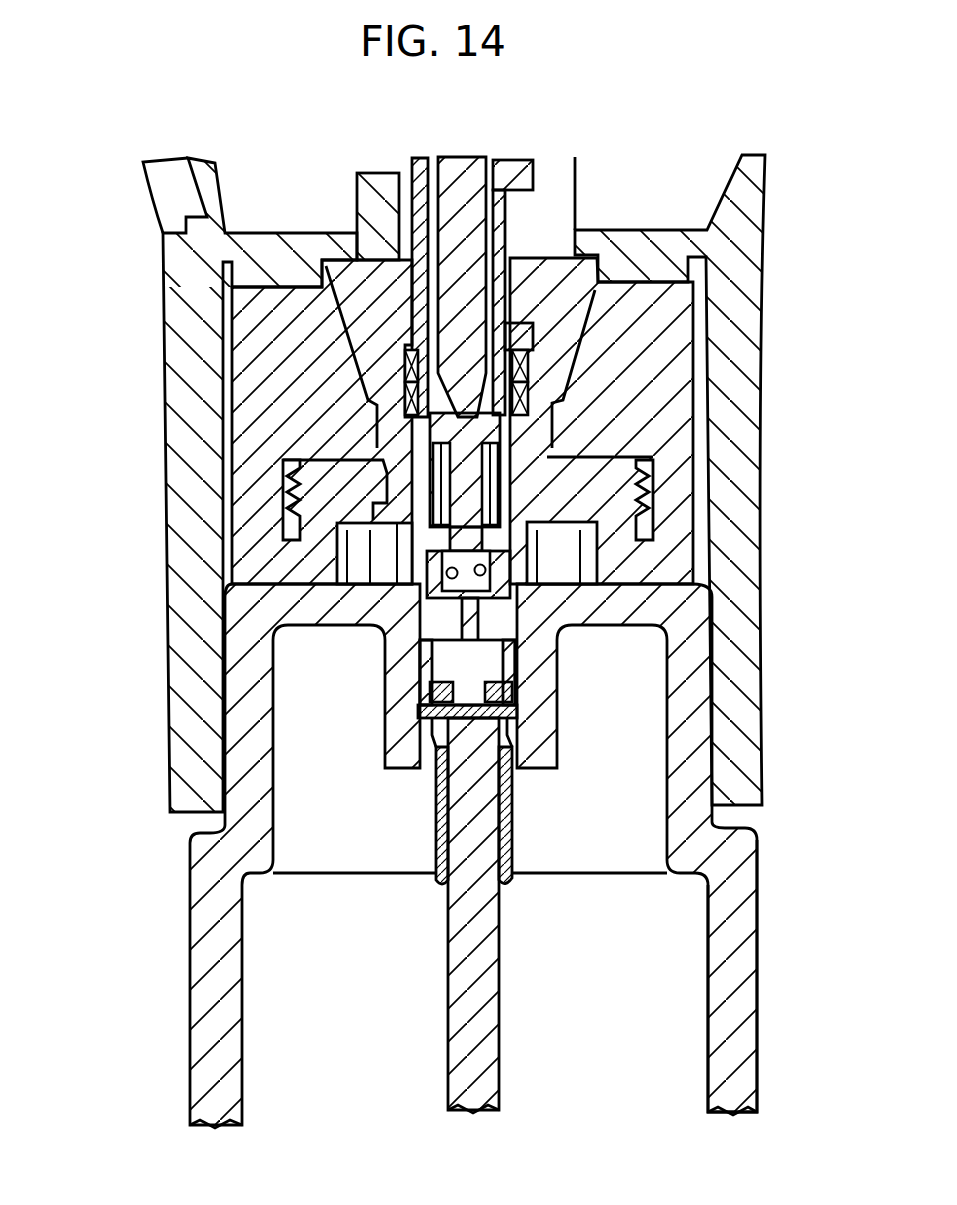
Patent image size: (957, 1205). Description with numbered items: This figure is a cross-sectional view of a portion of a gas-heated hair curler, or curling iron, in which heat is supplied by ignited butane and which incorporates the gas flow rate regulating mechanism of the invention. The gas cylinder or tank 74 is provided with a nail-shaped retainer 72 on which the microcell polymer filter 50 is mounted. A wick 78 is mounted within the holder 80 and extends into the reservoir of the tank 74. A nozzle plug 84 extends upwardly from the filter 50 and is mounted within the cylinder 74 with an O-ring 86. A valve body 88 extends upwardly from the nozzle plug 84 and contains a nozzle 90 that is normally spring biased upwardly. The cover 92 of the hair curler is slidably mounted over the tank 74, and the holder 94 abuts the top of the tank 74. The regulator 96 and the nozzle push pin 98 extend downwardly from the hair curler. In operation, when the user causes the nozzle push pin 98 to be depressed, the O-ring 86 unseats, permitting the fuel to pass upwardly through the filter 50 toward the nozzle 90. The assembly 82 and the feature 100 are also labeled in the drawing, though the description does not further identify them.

The microcell polymer filter 50 is at (510, 693).
The nail-shaped retainer 72 is at (500, 778).
The gas cylinder or tank 74 is at (748, 962).
The wick 78 is at (487, 822).
The holder 80 is at (510, 872).
The valve assembly 82 is at (610, 1177).
The nozzle plug 84 is at (505, 633).
The O-ring 86 is at (420, 607).
The valve body 88 is at (560, 483).
The nozzle 90 is at (620, 437).
The cover 92 is at (183, 517).
The holder 94 is at (272, 428).
The regulator 96 is at (395, 375).
The nozzle push pin 98 is at (448, 260).
The detent ball 100 is at (484, 572).